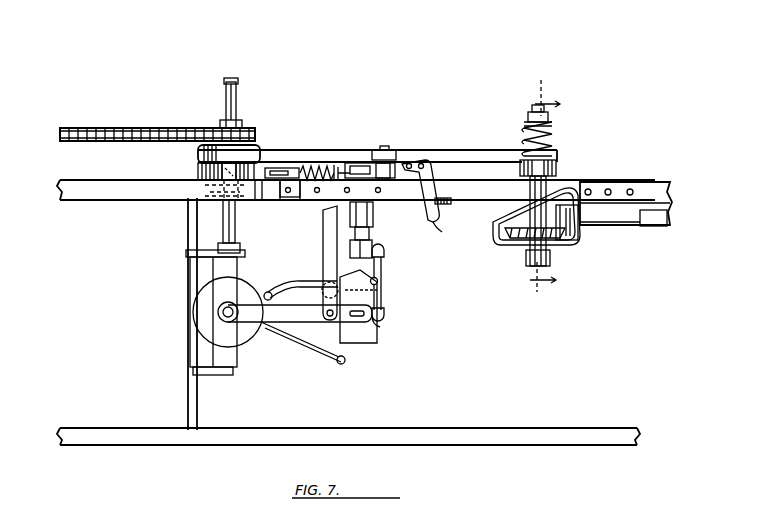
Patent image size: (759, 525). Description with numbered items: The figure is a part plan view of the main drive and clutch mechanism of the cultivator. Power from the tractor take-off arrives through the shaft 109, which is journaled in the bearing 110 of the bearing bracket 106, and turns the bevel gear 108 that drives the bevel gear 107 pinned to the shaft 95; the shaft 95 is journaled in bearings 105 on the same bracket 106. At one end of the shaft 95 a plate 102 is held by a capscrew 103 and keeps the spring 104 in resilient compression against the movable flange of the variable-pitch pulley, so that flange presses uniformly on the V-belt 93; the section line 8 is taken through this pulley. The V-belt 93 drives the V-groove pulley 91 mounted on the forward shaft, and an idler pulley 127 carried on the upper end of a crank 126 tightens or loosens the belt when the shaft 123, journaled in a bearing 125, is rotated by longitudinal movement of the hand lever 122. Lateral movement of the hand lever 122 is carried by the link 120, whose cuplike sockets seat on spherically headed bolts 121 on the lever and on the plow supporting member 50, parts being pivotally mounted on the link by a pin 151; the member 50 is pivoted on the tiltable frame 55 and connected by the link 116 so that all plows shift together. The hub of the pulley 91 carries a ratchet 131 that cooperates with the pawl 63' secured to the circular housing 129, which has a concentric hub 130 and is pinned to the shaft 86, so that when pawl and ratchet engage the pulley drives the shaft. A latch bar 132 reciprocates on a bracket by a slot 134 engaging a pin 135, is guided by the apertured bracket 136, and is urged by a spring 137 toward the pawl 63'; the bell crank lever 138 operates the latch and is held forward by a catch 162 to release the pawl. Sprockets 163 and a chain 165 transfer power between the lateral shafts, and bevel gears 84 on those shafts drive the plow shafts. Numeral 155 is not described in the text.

The chain 165 is at (113, 128).
The sprocket 163 is at (246, 123).
The V-belt 93 is at (441, 150).
The idler pulley 127 is at (415, 146).
The V-groove pulley 91 is at (262, 146).
The slot 134 is at (278, 169).
The pin 135 is at (302, 166).
The latch bar 132 is at (310, 172).
The crank 126 is at (362, 166).
The spring 137 is at (352, 162).
The bell crank lever 138 is at (430, 218).
The catch 162 is at (441, 205).
The ratchet 131 is at (210, 180).
The circular housing 129 is at (210, 167).
The concentric hub 130 is at (178, 198).
The apertured bracket 136 is at (285, 199).
The pawl 63' is at (269, 198).
The shaft 86 is at (222, 231).
The tiltable frame 55 is at (232, 342).
The member 50 is at (298, 318).
The bevel gear 84 is at (266, 291).
The shaft 123 is at (330, 233).
The link 116 is at (330, 247).
The bearing 125 is at (374, 233).
The hand lever 122 is at (386, 262).
The pin 151 is at (380, 283).
The link 120 is at (386, 298).
The spherically headed bolt 121 is at (382, 322).
The bearing 105 is at (529, 180).
The bearing bracket 106 is at (540, 262).
The spring 104 is at (554, 130).
The capscrew 103 is at (530, 114).
The plate 102 is at (526, 124).
The section line 8 is at (545, 185).
The shaft 95 is at (553, 205).
The bevel gear 107 is at (562, 240).
The bevel gear 108 is at (578, 226).
The bearing 110 is at (613, 200).
The shaft 109 is at (654, 226).
The member 155 is at (520, 517).